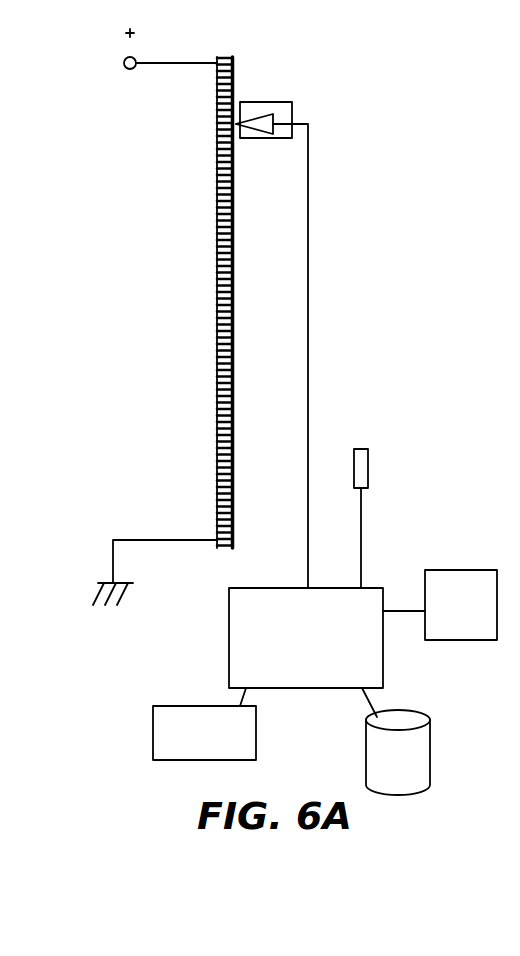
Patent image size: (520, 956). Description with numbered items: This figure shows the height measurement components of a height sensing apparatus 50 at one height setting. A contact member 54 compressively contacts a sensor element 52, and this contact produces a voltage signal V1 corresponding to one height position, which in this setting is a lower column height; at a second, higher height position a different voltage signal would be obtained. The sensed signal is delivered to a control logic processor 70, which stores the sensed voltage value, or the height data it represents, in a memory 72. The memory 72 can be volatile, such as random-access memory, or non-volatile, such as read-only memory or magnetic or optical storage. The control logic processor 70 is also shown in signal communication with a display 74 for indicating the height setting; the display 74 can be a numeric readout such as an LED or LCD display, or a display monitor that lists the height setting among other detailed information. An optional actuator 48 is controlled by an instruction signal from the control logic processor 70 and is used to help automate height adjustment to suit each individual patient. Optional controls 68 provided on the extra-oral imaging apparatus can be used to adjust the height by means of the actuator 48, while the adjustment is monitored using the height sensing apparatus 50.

The sensor element 52 is at (215, 202).
The contact member 54 is at (273, 118).
The voltage signal V1 is at (237, 123).
The height sensing apparatus 50 is at (393, 214).
The controls 68 is at (369, 472).
The actuator 48 is at (457, 575).
The control logic processor 70 is at (229, 639).
The display 74 is at (194, 712).
The memory 72 is at (418, 716).